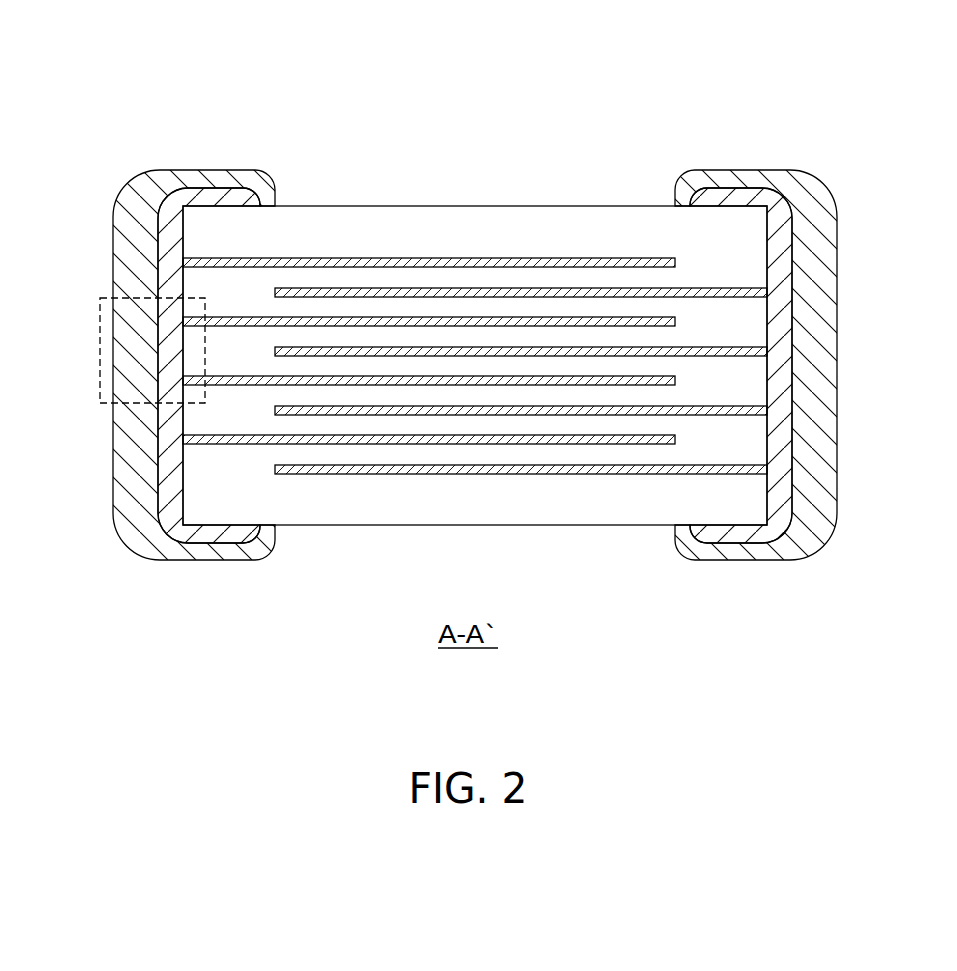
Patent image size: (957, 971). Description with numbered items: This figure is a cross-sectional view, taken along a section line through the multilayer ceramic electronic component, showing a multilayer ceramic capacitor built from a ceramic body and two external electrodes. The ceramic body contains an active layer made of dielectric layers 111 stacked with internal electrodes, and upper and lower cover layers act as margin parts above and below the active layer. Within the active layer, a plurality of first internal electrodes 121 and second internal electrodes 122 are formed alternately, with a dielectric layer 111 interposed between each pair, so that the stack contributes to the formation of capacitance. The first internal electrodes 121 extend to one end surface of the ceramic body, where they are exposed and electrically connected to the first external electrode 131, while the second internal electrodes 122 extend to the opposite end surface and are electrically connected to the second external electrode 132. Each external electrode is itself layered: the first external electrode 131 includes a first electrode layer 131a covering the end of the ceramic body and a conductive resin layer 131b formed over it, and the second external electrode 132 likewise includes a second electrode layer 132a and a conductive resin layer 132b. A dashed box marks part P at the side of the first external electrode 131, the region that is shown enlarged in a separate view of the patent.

The dielectric layer 111 is at (425, 312).
The first internal electrode 121 is at (477, 260).
The second internal electrode 122 is at (533, 290).
The first external electrode 131 is at (224, 293).
The first electrode layer 131a is at (153, 67).
The conductive resin layer 131b is at (177, 170).
The second external electrode 132 is at (723, 293).
The second electrode layer 132a is at (790, 67).
The conductive resin layer 132b is at (768, 170).
The part P is at (100, 328).